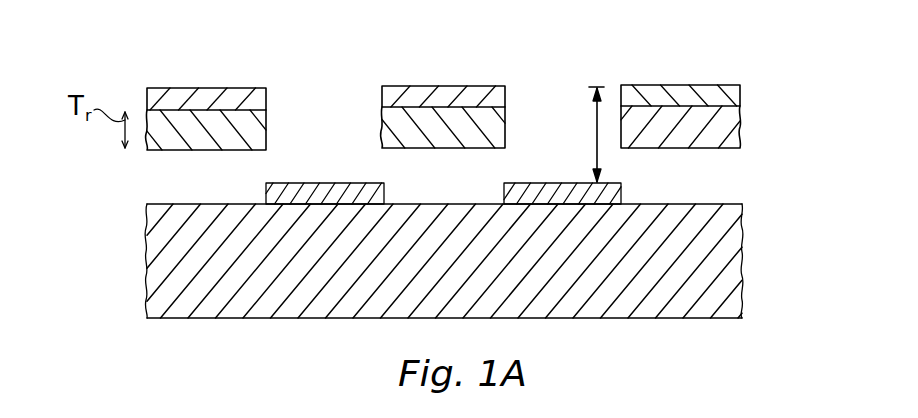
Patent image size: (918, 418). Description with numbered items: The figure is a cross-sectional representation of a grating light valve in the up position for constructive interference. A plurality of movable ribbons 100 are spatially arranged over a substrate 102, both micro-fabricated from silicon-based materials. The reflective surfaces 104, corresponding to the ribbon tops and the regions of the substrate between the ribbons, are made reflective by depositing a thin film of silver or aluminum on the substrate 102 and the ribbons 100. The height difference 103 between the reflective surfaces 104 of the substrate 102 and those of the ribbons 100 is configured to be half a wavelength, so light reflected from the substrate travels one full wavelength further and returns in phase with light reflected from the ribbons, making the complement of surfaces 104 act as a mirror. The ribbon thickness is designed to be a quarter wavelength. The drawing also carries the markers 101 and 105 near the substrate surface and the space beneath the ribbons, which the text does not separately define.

The movable ribbons 100 is at (266, 113).
The substrate surface 101 is at (723, 203).
The substrate 102 is at (742, 267).
The height difference 103 is at (597, 110).
The reflective surfaces 104 is at (197, 87).
The gap region 105 is at (175, 182).